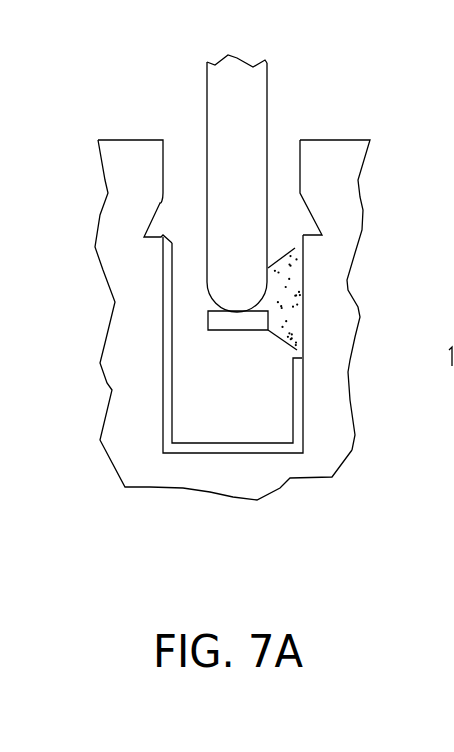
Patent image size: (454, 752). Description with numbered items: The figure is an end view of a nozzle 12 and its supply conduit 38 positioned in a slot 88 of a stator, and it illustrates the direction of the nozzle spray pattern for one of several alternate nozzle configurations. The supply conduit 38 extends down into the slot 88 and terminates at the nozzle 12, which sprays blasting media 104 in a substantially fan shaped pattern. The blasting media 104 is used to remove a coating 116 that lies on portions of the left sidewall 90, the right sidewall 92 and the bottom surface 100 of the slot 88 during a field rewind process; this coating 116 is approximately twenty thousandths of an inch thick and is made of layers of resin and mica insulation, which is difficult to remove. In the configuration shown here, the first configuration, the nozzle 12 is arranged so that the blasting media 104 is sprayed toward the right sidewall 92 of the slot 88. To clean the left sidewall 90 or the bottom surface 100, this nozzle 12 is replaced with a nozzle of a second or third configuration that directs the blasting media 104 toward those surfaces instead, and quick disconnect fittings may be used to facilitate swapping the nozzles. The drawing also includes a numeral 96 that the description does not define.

The slot 88 is at (187, 160).
The supply conduit 38 is at (223, 98).
The retaining lips 96 is at (157, 227).
The blasting media 104 is at (283, 298).
The nozzle 12 is at (208, 312).
The coating 116 is at (192, 442).
The left sidewall 90 is at (163, 405).
The right sidewall 92 is at (303, 415).
The bottom surface 100 is at (220, 457).